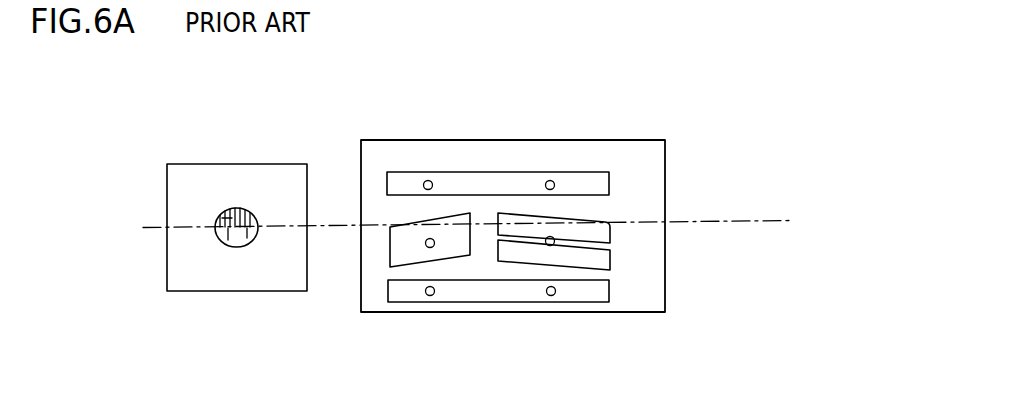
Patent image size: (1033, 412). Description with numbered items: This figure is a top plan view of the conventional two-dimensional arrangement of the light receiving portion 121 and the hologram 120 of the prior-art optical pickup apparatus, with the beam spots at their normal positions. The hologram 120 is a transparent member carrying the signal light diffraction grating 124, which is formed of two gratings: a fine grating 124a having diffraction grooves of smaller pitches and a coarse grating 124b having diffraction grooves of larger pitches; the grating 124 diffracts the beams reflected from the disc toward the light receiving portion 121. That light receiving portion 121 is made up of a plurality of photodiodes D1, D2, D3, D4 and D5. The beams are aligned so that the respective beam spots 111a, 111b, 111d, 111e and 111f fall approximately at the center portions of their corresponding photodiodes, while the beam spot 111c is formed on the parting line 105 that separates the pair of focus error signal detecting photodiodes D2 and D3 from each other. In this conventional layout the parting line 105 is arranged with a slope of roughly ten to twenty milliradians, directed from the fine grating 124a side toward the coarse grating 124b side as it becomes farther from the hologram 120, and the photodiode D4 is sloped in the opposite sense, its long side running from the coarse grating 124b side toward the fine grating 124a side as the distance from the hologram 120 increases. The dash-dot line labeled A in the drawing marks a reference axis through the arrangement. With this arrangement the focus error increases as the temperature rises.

The hologram 120 is at (284, 272).
The signal light diffraction grating 124 is at (258, 337).
The fine grating 124a is at (216, 222).
The coarse grating 124b is at (237, 236).
The light receiving portion 121 is at (637, 160).
The parting line 105 is at (611, 260).
The beam spot 111a is at (551, 296).
The beam spot 111b is at (430, 296).
The beam spot 111c is at (552, 238).
The beam spot 111d is at (433, 239).
The beam spot 111e is at (550, 180).
The beam spot 111f is at (428, 180).
The photodiode D1 is at (488, 287).
The photodiode D2 is at (597, 262).
The photodiode D3 is at (597, 235).
The photodiode D4 is at (400, 250).
The photodiode D5 is at (592, 182).
The optical axis A is at (752, 221).